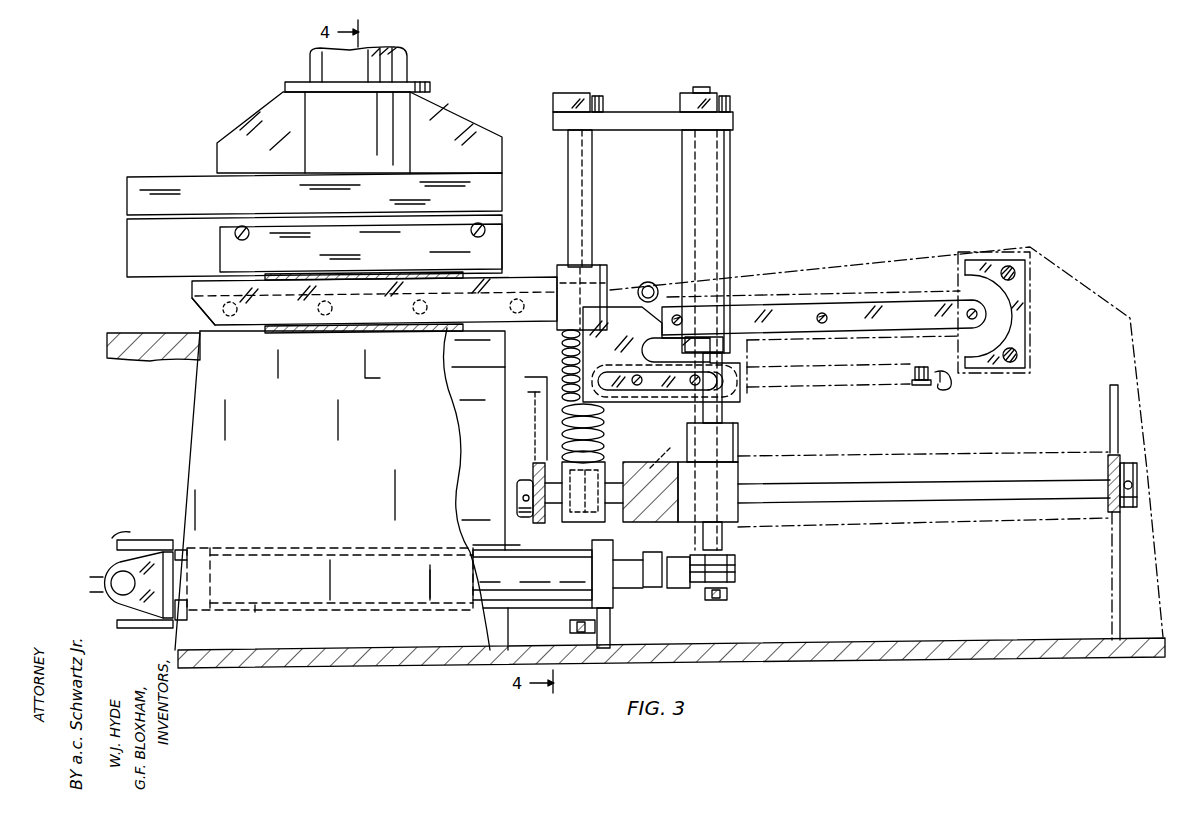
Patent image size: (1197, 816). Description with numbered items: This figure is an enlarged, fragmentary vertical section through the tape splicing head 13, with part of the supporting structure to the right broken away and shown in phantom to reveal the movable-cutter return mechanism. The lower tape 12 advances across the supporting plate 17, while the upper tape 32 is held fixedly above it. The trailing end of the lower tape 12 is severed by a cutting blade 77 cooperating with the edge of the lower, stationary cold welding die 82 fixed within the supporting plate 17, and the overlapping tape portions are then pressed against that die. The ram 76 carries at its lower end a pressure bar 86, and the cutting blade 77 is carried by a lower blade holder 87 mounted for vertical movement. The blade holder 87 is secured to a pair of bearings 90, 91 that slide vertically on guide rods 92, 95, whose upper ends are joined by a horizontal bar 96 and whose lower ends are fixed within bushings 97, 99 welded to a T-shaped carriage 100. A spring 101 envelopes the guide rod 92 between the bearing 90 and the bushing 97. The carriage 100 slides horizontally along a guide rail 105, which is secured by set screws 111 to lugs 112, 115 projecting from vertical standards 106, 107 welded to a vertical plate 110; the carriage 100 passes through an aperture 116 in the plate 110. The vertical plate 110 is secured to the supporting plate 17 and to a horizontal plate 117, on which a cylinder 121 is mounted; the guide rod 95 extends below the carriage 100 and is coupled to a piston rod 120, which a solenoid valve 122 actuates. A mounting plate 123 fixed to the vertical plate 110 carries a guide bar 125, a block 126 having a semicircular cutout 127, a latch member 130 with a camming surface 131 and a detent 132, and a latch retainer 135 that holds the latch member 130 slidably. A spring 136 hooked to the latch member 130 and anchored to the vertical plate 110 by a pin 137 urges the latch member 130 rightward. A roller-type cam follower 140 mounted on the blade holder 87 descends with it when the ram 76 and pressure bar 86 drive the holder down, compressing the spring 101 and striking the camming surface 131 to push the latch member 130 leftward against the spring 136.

The head 13 is at (102, 276).
The ram 76 is at (312, 70).
The pressure bar 86 is at (503, 243).
The upper tape 32 is at (459, 271).
The lower blade holder 87 is at (512, 280).
The cutting blade 77 is at (196, 305).
The lower tape 12 is at (272, 332).
The supporting plate 17 is at (140, 355).
The lower cold welding die 82 is at (494, 372).
The guide rod 92 is at (567, 182).
The horizontal bar 96 is at (655, 116).
The guide rod 95 is at (700, 88).
The bearing 91 is at (686, 181).
The bearing 90 is at (600, 264).
The cam follower 140 is at (660, 286).
The vertical plate 110 is at (862, 263).
The guide bar 125 is at (926, 306).
The camming surface 131 is at (678, 305).
The mounting plate 123 is at (808, 343).
The block 126 is at (1023, 343).
The semicircular cutout 127 is at (1003, 293).
The spring 136 is at (922, 386).
The pin 137 is at (953, 388).
The spring 101 is at (561, 346).
The latch member 130 is at (580, 367).
The detent 132 is at (637, 349).
The latch retainer 135 is at (698, 395).
The bushing 99 is at (739, 430).
The T-shaped carriage 100 is at (658, 462).
The lug 112 is at (537, 523).
The vertical standard 106 is at (537, 406).
The set screws 111 is at (526, 479).
The guide rail 105 is at (937, 497).
The aperture 116 is at (907, 453).
The vertical standard 107 is at (1112, 417).
The lug 115 is at (1110, 462).
The horizontal plate 117 is at (933, 645).
The bushing 97 is at (612, 523).
The piston rod 120 is at (680, 588).
The cylinder 121 is at (486, 548).
The solenoid valve 122 is at (168, 540).